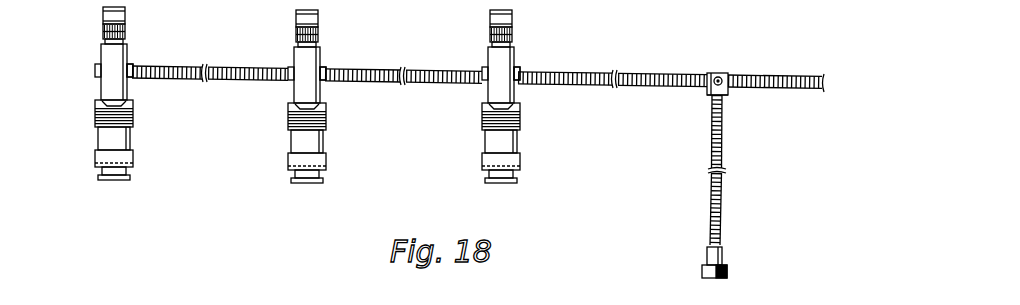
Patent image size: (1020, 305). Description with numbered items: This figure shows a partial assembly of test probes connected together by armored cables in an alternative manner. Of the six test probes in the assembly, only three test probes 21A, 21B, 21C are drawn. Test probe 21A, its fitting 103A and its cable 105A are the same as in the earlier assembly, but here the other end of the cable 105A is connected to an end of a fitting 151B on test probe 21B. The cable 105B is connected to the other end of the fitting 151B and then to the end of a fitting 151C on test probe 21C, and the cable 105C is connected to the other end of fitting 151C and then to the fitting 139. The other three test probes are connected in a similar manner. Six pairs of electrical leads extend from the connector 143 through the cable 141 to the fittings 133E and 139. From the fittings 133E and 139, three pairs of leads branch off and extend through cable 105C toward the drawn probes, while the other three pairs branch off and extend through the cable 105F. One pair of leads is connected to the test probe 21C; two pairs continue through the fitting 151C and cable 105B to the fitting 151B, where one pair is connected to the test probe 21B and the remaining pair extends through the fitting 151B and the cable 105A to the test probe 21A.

The test probe 21A is at (132, 162).
The test probe 21B is at (325, 165).
The test probe 21C is at (520, 167).
The fitting 103A is at (130, 60).
The fitting 151B is at (322, 60).
The fitting 151C is at (517, 65).
The cable 105A is at (237, 79).
The cable 105B is at (428, 83).
The cable 105C is at (632, 72).
The cable 105F is at (772, 88).
The fitting 133E is at (728, 74).
The fitting 139 is at (705, 92).
The cable 141 is at (712, 185).
The connector 143 is at (704, 265).